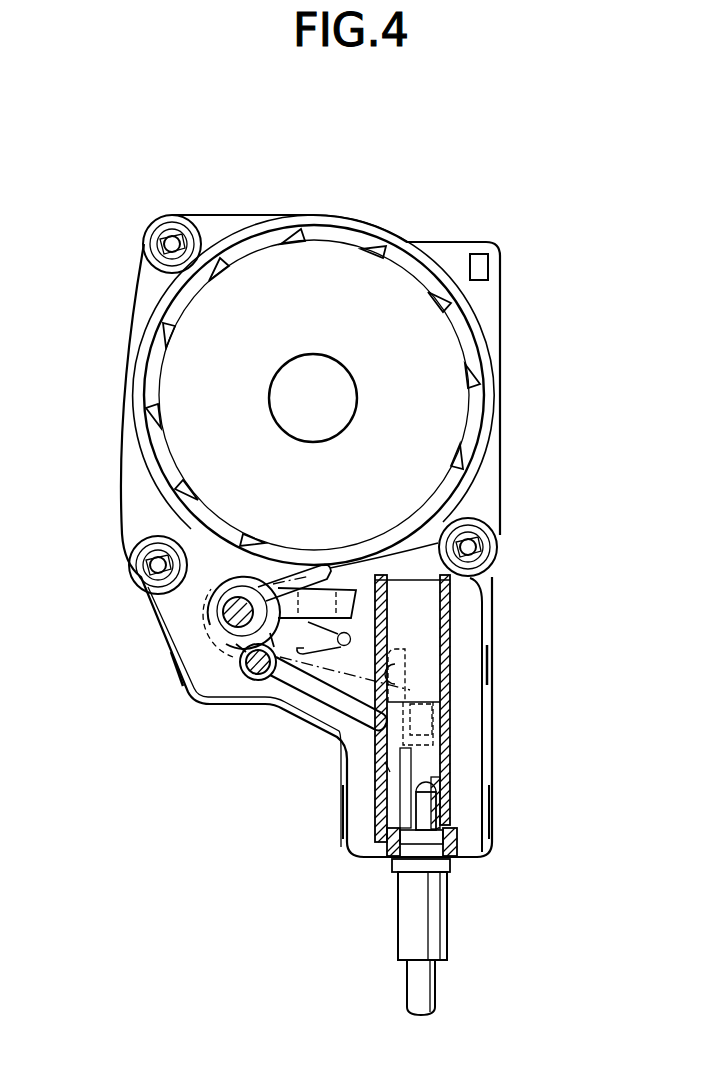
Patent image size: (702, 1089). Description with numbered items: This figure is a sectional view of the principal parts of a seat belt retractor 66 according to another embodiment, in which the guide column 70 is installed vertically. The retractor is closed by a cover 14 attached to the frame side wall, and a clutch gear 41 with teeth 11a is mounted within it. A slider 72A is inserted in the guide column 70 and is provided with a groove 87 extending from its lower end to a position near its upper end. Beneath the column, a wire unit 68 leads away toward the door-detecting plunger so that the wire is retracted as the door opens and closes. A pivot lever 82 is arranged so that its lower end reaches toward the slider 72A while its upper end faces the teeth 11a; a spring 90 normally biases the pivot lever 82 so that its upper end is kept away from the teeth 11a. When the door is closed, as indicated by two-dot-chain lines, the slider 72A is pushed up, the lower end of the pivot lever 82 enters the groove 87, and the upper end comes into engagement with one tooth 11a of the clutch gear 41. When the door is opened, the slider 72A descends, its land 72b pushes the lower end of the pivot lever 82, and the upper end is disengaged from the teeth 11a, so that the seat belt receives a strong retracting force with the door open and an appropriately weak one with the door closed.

The cover 14 is at (240, 230).
The seat belt retractor 66 is at (490, 212).
The clutch gear 41 is at (487, 412).
The teeth 11a is at (163, 333).
The pivot lever 82 is at (330, 693).
The spring 90 is at (350, 618).
The guide column 70 is at (453, 705).
The land 72b is at (405, 688).
The slider 72A is at (432, 763).
The groove 87 is at (395, 765).
The wire unit 68 is at (446, 985).